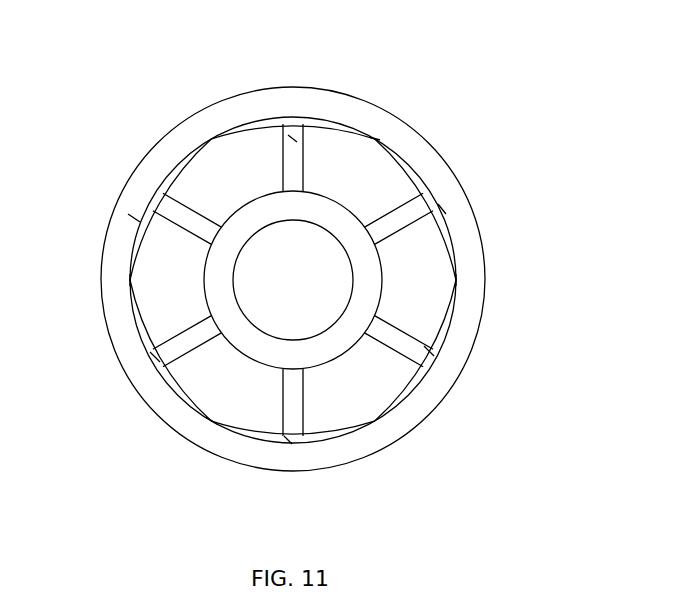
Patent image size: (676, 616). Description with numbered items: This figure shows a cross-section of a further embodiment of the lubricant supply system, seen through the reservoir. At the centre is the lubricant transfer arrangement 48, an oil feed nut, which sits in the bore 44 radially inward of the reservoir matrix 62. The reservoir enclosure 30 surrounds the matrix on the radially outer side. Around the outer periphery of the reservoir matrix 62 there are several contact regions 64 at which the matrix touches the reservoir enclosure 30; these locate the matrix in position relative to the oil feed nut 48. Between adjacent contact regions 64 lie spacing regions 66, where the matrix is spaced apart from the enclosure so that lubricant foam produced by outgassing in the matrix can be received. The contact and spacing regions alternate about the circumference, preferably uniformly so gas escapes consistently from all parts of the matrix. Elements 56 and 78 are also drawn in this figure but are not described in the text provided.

The reservoir enclosure 30 is at (445, 170).
The bore 44 is at (357, 320).
The oil feed nut 48 is at (293, 280).
The shell inner surface 56 is at (135, 218).
The reservoir matrix 62 is at (425, 283).
The contact regions 64 is at (377, 128).
The spacing regions 66 is at (292, 141).
The spoke 78 is at (303, 137).